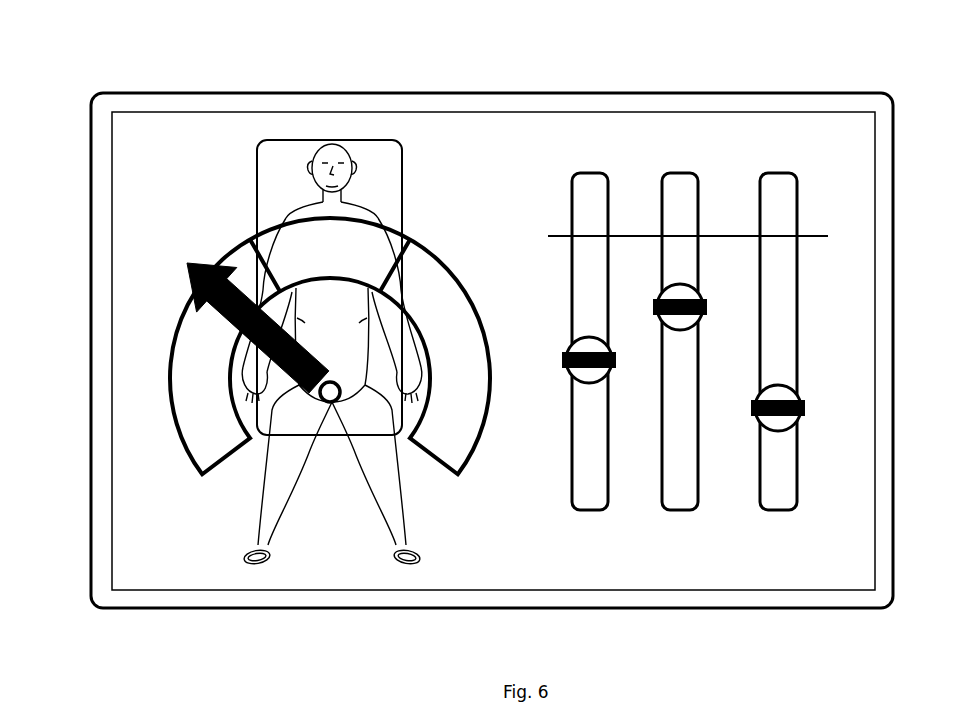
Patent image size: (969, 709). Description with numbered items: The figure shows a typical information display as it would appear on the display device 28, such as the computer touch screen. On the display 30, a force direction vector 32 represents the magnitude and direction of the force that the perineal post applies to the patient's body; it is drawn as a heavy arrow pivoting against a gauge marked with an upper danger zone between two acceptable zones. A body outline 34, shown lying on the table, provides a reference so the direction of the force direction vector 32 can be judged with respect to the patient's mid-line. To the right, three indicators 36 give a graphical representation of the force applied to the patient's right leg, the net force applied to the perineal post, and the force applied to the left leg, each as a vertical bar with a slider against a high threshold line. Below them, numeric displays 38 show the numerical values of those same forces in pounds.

The display device 28 is at (265, 102).
The display 30 is at (182, 127).
The force direction vector 32 is at (190, 262).
The body outline 34 is at (333, 148).
The indicators 36 is at (583, 190).
The numeric displays 38 is at (585, 550).